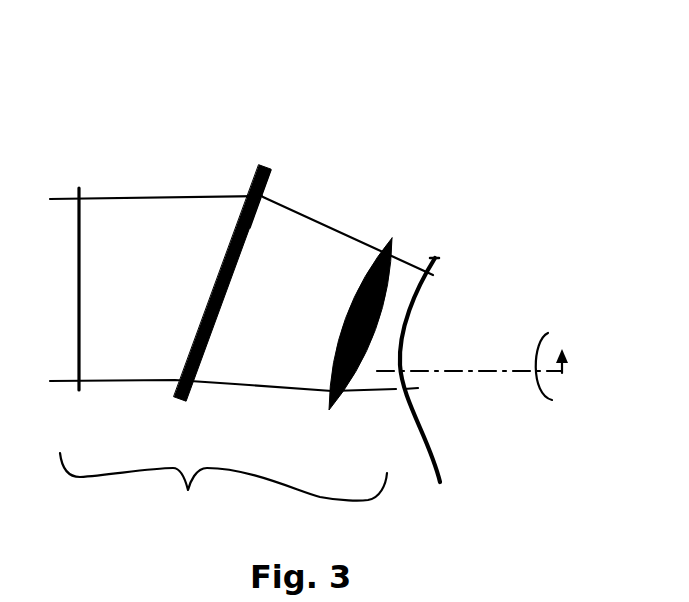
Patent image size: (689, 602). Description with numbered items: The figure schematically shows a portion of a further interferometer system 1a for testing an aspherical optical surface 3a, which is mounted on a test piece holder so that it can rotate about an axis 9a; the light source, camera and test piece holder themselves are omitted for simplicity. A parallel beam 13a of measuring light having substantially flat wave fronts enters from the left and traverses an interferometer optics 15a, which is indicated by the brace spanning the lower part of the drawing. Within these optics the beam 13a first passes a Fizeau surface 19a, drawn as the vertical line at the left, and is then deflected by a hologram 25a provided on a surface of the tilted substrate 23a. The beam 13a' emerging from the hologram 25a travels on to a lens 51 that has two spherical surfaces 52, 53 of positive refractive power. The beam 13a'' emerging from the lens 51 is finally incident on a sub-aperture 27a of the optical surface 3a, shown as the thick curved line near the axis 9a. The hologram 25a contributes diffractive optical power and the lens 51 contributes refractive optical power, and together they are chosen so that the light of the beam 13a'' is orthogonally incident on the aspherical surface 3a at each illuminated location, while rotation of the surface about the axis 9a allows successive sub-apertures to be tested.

The interferometer system 1a is at (213, 88).
The Fizeau surface 19a is at (87, 190).
The parallel beam of measuring light 13a is at (156, 161).
The substrate 23a is at (268, 165).
The hologram 25a is at (272, 181).
The lens 51 is at (390, 240).
The aspherical optical surface 3a is at (433, 258).
The sub-aperture 27a is at (412, 389).
The axis 9a is at (457, 373).
The spherical surface 53 is at (344, 360).
The spherical surface 52 is at (334, 401).
The beam emerging from lens 13a'' is at (364, 431).
The beam emerging from hologram 13a' is at (191, 417).
The interferometer optics 15a is at (223, 493).